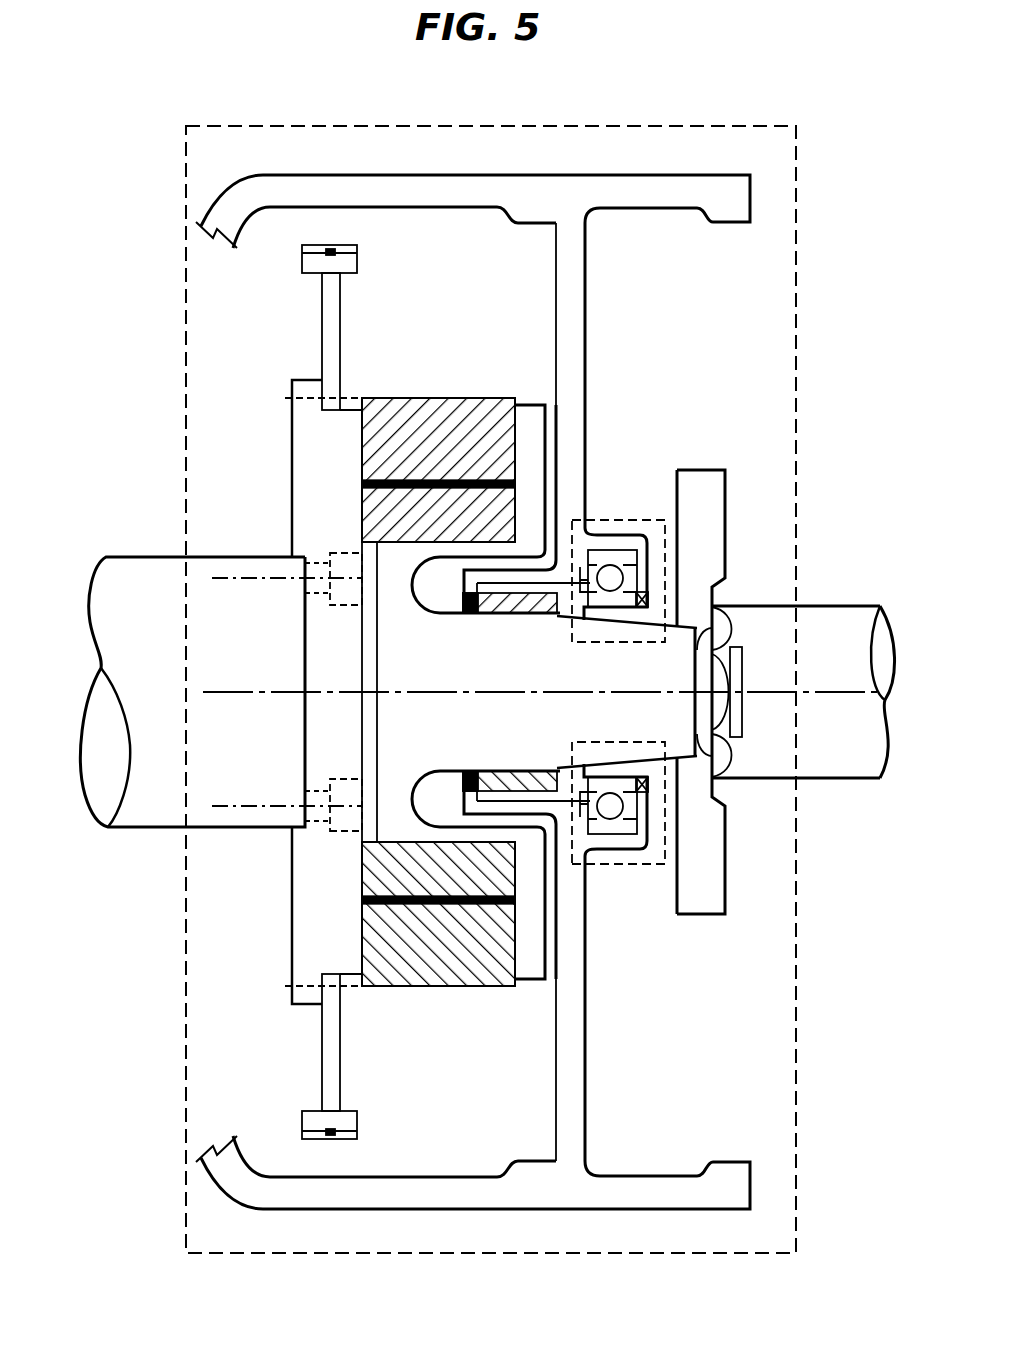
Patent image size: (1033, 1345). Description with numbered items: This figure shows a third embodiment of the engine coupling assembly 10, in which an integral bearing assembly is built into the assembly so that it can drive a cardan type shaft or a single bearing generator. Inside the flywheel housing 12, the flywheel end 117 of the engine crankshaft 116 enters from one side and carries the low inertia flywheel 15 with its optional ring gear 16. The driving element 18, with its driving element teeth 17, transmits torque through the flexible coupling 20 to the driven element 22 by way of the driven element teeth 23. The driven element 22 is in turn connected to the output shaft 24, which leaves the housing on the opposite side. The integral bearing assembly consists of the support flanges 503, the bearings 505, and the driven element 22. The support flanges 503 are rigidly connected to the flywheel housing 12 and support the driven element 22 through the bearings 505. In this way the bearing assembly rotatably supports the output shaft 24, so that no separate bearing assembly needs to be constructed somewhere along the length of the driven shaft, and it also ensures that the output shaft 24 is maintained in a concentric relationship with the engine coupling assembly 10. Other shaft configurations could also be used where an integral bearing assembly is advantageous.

The engine coupling assembly 10 is at (582, 126).
The flywheel housing 12 is at (397, 175).
The low inertia flywheel 15 is at (340, 332).
The ring gear 16 is at (355, 252).
The driving element teeth 17 is at (447, 425).
The driving element 18 is at (293, 907).
The flexible coupling 20 is at (388, 397).
The driven element 22 is at (727, 510).
The driven element teeth 23 is at (365, 578).
The output shaft 24 is at (822, 605).
The engine crankshaft 116 is at (86, 603).
The flywheel end 117 is at (225, 553).
The support flanges 503 is at (586, 368).
The bearings 505 is at (605, 517).